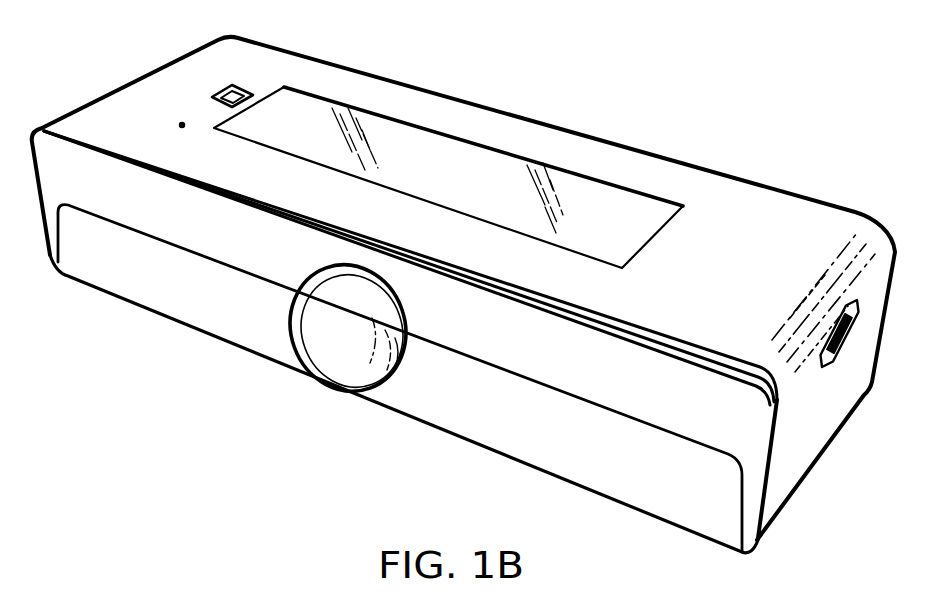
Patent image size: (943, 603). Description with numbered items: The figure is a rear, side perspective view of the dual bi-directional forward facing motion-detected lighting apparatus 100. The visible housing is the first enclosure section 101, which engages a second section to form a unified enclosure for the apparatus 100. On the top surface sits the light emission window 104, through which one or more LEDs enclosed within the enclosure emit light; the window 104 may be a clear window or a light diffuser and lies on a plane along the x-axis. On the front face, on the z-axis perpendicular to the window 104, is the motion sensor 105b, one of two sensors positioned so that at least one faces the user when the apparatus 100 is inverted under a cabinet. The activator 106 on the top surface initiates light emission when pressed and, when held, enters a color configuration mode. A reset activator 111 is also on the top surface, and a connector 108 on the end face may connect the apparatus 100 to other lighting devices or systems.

The dual bi-directional forward facing motion-detected lighting apparatus 100 is at (716, 119).
The first enclosure section 101 is at (772, 213).
The light emission window 104 is at (415, 147).
The motion sensor 105b is at (332, 347).
The activator 106 is at (216, 92).
The connector 108 is at (850, 344).
The reset activator 111 is at (181, 123).